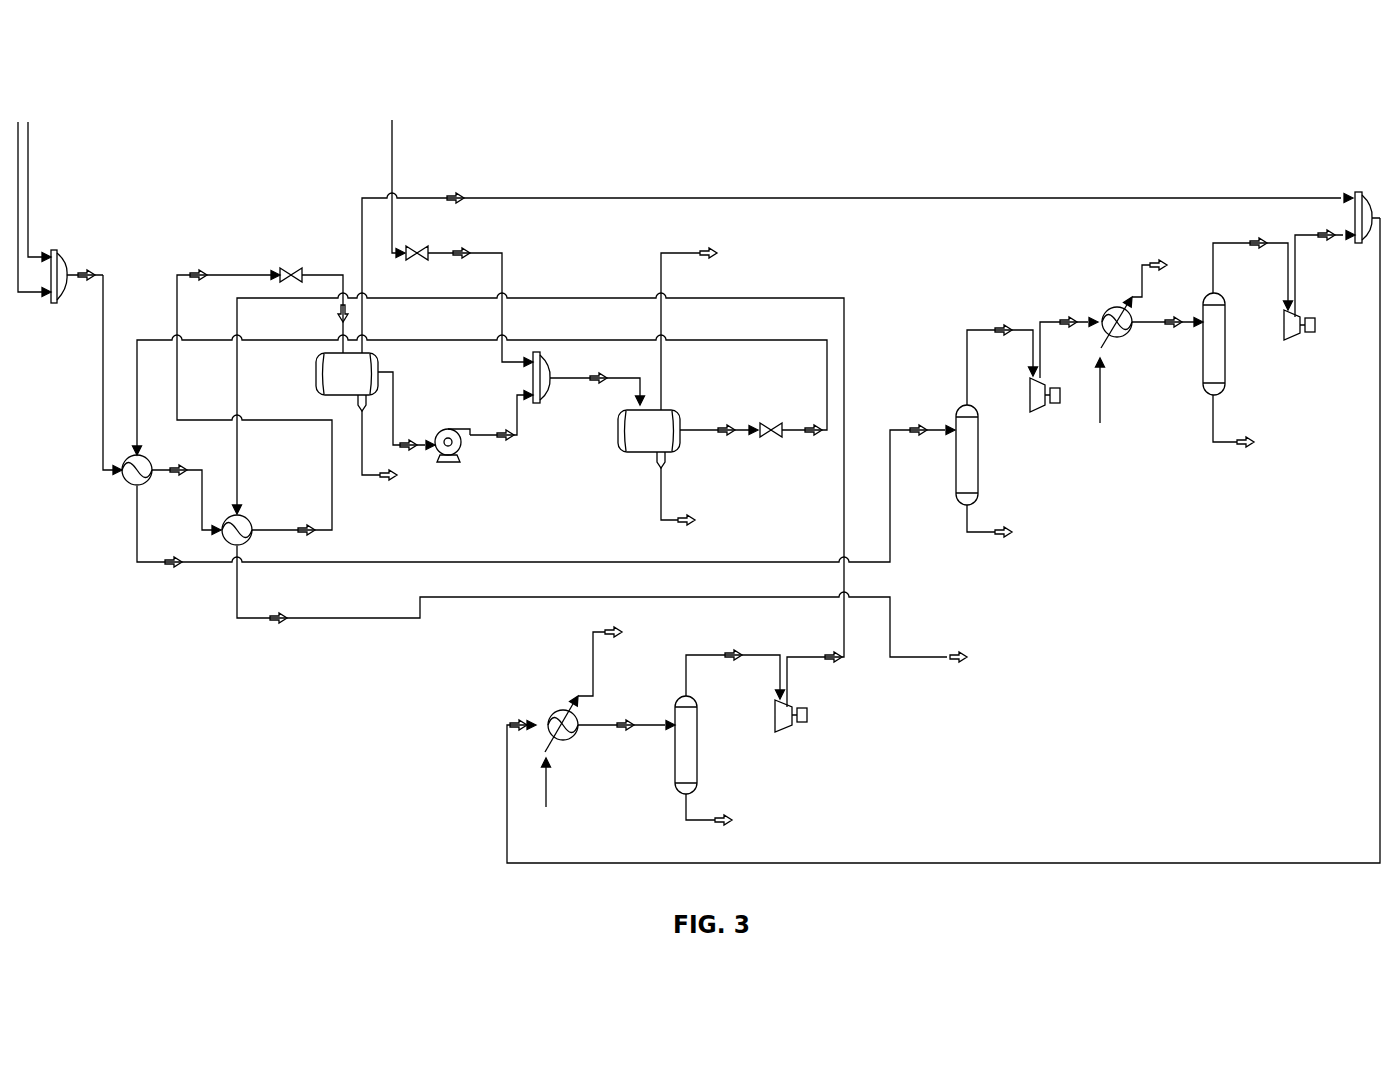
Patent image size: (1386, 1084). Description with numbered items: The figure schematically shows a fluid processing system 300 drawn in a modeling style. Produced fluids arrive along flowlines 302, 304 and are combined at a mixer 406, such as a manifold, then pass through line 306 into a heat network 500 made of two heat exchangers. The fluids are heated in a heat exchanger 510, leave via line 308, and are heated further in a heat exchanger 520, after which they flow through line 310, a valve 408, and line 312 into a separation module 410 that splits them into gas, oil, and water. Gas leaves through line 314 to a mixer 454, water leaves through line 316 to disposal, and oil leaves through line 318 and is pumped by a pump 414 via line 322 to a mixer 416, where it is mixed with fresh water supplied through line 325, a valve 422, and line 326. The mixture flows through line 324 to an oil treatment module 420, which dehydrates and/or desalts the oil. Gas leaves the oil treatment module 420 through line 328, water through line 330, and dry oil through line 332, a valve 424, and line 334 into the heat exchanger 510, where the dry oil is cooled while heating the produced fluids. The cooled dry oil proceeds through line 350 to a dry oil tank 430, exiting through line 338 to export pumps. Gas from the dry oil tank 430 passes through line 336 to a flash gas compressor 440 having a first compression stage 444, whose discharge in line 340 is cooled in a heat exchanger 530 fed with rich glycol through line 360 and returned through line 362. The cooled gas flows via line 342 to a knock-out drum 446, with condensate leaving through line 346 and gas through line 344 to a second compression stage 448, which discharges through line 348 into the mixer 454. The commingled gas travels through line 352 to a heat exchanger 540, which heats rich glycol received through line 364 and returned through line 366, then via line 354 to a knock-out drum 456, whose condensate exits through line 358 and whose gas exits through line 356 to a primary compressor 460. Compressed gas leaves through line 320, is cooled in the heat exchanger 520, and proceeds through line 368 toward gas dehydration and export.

The fluid processing system 300 is at (1302, 106).
The flowline 302 is at (18, 143).
The flowline 304 is at (28, 193).
The line 306 is at (100, 410).
The line 308 is at (158, 475).
The line 310 is at (218, 275).
The line 312 is at (318, 275).
The line 314 is at (360, 205).
The line 316 is at (365, 478).
The line 318 is at (398, 390).
The line 320 is at (843, 298).
The line 322 is at (485, 438).
The line 324 is at (575, 380).
The line 325 is at (393, 143).
The line 326 is at (505, 270).
The line 328 is at (665, 360).
The line 330 is at (658, 500).
The line 332 is at (695, 432).
The line 334 is at (155, 340).
The line 336 is at (985, 330).
The line 338 is at (985, 535).
The line 340 is at (1055, 322).
The line 342 is at (1148, 325).
The line 344 is at (1252, 243).
The line 346 is at (1227, 450).
The line 348 is at (1297, 262).
The line 350 is at (135, 530).
The line 352 is at (1380, 472).
The line 354 is at (602, 723).
The line 356 is at (712, 657).
The line 358 is at (683, 818).
The line 360 is at (1102, 405).
The line 362 is at (1142, 265).
The line 364 is at (548, 785).
The line 366 is at (593, 660).
The line 368 is at (255, 620).
The mixer 406 is at (52, 305).
The valve 408 is at (290, 268).
The separation module 410 is at (320, 383).
The pump 414 is at (445, 462).
The mixer 416 is at (537, 405).
The oil treatment module 420 is at (640, 403).
The valve 422 is at (418, 240).
The valve 424 is at (775, 438).
The dry oil tank 430 is at (960, 462).
The flash gas compressor 440 is at (1073, 478).
The first compression stage 444 is at (1035, 412).
The knock-out drum 446 is at (1207, 382).
The second compression stage 448 is at (1290, 342).
The mixer 454 is at (1357, 194).
The knock-out drum 456 is at (672, 745).
The primary compressor 460 is at (780, 733).
The heat network 500 is at (127, 598).
The heat exchanger 510 is at (125, 480).
The heat exchanger 520 is at (252, 520).
The heat exchanger 530 is at (1108, 310).
The heat exchanger 540 is at (548, 712).